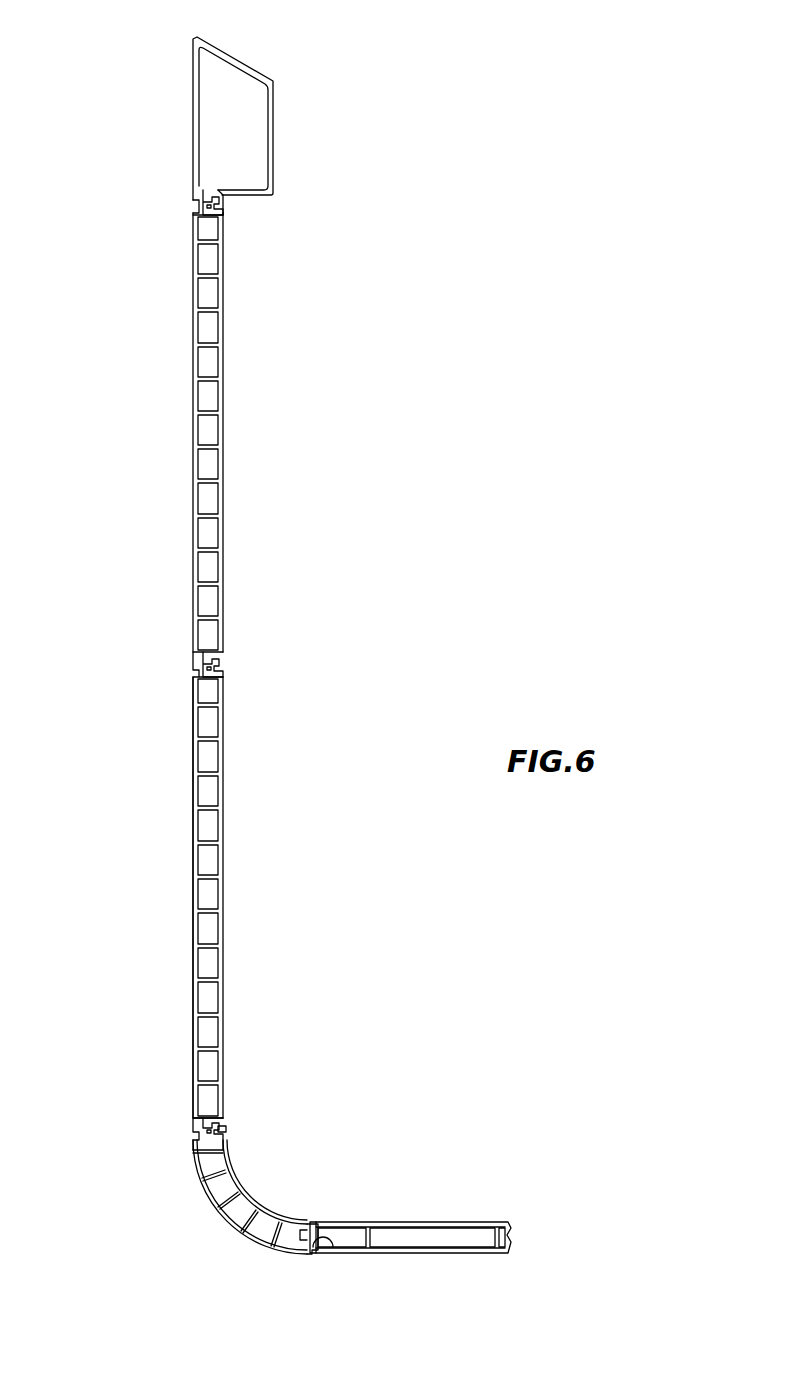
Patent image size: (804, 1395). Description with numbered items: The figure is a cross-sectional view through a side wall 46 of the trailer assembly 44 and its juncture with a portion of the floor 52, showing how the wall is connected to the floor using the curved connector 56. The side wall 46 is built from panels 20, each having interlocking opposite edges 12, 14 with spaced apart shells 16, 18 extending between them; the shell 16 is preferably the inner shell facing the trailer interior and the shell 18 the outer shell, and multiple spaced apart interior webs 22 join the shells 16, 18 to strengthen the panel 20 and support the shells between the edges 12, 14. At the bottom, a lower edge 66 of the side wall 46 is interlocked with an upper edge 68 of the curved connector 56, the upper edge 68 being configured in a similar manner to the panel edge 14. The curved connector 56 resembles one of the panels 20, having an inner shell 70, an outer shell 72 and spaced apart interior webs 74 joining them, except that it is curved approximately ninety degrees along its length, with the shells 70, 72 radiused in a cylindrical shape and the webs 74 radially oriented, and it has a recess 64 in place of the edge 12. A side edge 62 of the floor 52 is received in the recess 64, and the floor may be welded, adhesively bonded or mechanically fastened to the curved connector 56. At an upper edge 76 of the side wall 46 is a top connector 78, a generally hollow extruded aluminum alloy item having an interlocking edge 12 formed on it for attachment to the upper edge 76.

The trailer assembly 44 is at (605, 178).
The top connector 78 is at (190, 85).
The upper edge of the side wall 76 is at (199, 196).
The interlocking edge 12 is at (226, 203).
The panel 20 is at (313, 761).
The inner shell 16 is at (226, 468).
The outer shell 18 is at (195, 570).
The interior webs 22 is at (208, 378).
The interlocking edge 14 is at (193, 680).
The side wall 46 is at (248, 592).
The floor 52 is at (432, 1265).
The recess 64 is at (320, 1245).
The curved connector 56 is at (241, 1187).
The inner shell 70 is at (245, 1182).
The outer shell 72 is at (250, 1197).
The interior webs 74 is at (228, 1175).
The lower edge of the side wall 66 is at (200, 1128).
The upper edge of the curved connector 68 is at (222, 1128).
The side edge of the floor 62 is at (305, 1228).